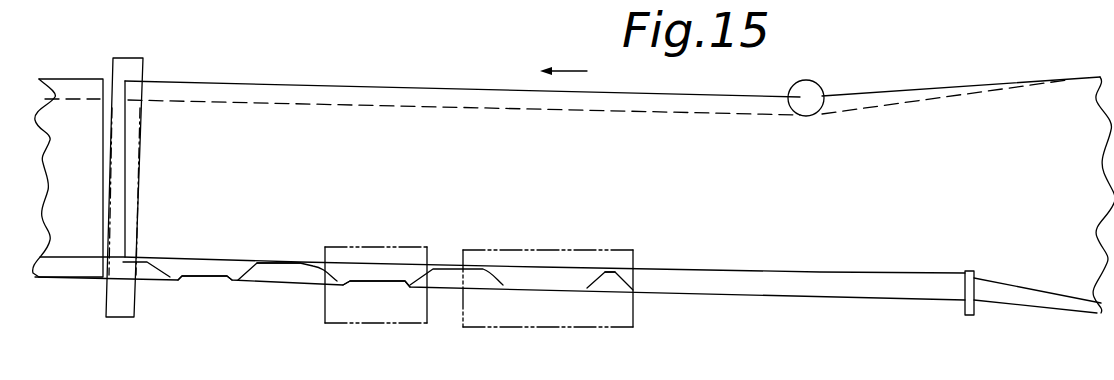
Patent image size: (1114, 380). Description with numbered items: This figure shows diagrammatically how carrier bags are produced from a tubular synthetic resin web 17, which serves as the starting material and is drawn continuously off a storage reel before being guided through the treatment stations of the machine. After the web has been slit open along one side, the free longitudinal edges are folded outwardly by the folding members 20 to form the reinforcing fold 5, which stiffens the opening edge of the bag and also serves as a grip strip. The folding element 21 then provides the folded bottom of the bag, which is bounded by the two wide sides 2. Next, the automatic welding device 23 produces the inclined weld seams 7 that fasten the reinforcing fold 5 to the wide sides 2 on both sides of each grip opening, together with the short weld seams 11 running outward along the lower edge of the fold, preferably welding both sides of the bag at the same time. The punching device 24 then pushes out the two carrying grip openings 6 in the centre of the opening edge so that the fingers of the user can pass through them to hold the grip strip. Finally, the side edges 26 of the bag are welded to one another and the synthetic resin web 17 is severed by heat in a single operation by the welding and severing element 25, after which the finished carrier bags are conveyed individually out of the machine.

The wide sides 2 is at (77, 238).
The reinforcing fold 5 is at (822, 292).
The carrying grip openings 6 is at (210, 275).
The weld seams 7 is at (255, 272).
The short weld seam 11 is at (280, 263).
The tubular synthetic resin web 17 is at (1016, 105).
The folding members 20 is at (979, 307).
The folding element 21 is at (823, 87).
The automatic welding device 23 is at (492, 327).
The punching device 24 is at (357, 323).
The welding and severing element 25 is at (105, 287).
The side edges 26 is at (102, 187).